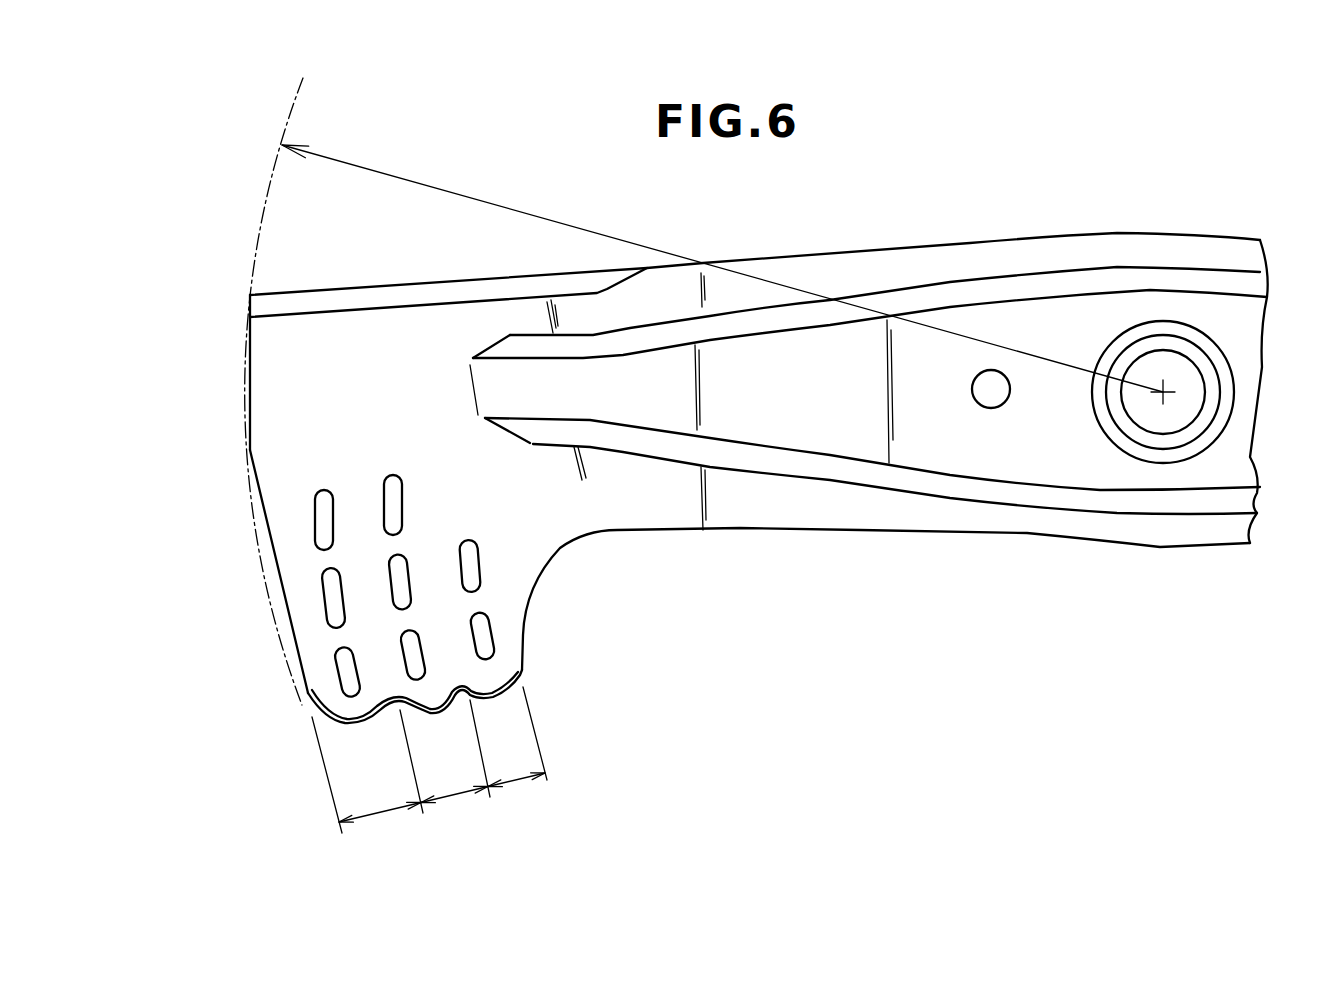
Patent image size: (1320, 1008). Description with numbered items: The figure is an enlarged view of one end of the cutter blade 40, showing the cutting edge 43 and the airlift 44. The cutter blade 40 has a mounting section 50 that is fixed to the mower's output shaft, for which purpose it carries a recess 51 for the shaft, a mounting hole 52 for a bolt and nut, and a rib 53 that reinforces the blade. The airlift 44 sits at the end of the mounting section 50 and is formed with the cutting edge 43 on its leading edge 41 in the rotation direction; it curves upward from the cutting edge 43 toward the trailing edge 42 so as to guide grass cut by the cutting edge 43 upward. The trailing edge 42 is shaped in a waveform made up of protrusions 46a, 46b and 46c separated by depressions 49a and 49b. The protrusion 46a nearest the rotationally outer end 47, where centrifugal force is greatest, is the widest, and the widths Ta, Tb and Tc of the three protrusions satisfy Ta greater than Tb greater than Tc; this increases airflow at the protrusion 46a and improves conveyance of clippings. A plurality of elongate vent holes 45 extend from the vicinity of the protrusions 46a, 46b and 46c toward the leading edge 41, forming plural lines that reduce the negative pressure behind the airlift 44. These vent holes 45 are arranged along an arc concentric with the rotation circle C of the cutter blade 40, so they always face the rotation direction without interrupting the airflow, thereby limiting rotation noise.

The cutter blade 40 is at (1140, 177).
The leading edge 41 is at (413, 270).
The trailing edge 42 is at (387, 732).
The cutting edge 43 is at (333, 303).
The airlift 44 is at (533, 542).
The vent holes 45 is at (330, 520).
The protrusion 46a is at (343, 727).
The protrusion 46b is at (440, 717).
The protrusion 46c is at (503, 703).
The outer end 47 is at (268, 547).
The depression 49a is at (307, 697).
The depression 49b is at (497, 683).
The mounting section 50 is at (930, 450).
The recess 51 is at (1177, 420).
The mounting hole 52 is at (997, 402).
The rib 53 is at (981, 293).
The rotation circle C is at (297, 95).
The width of protrusion 46a Ta is at (378, 820).
The width of protrusion 46b Tb is at (455, 795).
The width of protrusion 46c Tc is at (525, 780).